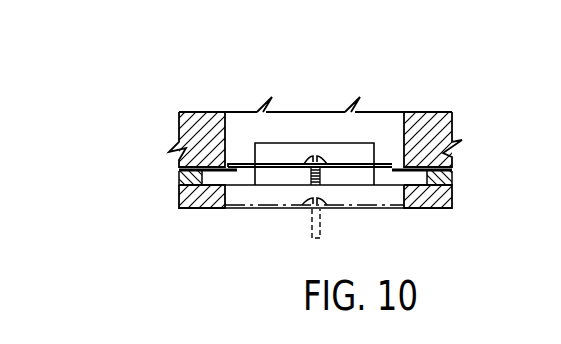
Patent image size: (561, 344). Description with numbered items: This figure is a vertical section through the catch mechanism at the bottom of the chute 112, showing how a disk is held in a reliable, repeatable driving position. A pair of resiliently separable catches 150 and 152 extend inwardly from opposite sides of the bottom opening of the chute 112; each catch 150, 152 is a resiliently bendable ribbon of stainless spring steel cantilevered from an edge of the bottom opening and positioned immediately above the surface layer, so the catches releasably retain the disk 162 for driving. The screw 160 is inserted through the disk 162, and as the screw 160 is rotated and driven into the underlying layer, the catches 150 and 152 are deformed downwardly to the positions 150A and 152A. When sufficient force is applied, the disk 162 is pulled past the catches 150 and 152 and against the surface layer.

The chute 112 is at (360, 152).
The separable catch 150 is at (227, 167).
The separable catch 152 is at (413, 168).
The deformed position of catch 150A is at (207, 172).
The deformed position of catch 152A is at (404, 183).
The screw 160 is at (314, 156).
The disk 162 is at (267, 165).